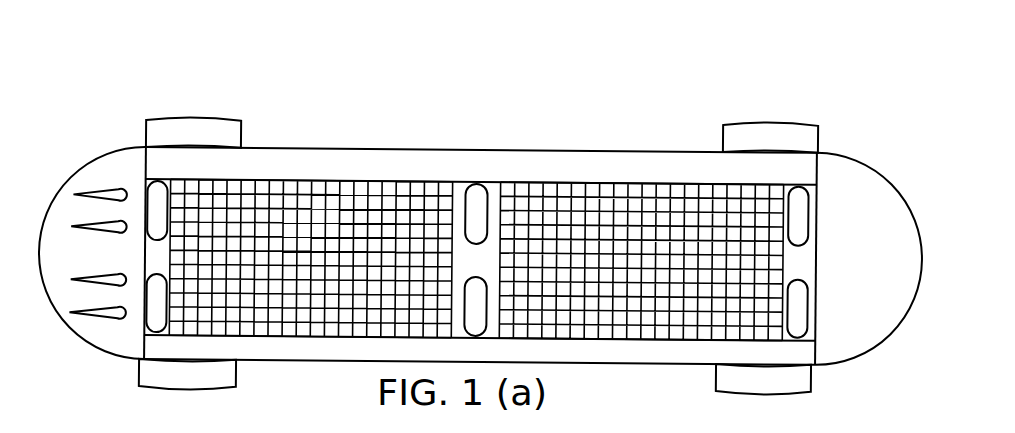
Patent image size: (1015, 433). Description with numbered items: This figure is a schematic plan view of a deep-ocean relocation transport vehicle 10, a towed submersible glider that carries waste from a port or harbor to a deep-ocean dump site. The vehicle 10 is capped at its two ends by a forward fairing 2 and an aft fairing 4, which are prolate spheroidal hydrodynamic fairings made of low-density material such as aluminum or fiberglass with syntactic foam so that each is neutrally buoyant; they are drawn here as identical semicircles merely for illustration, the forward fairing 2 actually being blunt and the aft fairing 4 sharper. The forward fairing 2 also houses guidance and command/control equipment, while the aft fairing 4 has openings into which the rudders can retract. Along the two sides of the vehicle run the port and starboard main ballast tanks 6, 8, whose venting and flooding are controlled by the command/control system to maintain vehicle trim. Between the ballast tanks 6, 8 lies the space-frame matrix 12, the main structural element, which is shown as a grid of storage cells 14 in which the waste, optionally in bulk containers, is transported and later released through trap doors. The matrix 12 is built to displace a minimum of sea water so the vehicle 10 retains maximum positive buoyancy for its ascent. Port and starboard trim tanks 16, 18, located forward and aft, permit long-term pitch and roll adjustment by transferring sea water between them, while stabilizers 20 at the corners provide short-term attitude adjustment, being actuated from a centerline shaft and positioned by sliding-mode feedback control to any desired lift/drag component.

The forward prolate spheroidal hydrodynamic fairing 2 is at (857, 287).
The aft prolate spheroidal hydrodynamic fairing 4 is at (116, 174).
The port main ballast tank 6 is at (338, 168).
The starboard main ballast tank 8 is at (313, 350).
The deep-ocean relocation transport vehicle 10 is at (750, 96).
The space-frame matrix 12 is at (612, 207).
The storage cells 14 is at (380, 188).
The port trim tank 16 is at (477, 203).
The starboard trim tank 18 is at (475, 318).
The stabilizers 20 is at (200, 132).